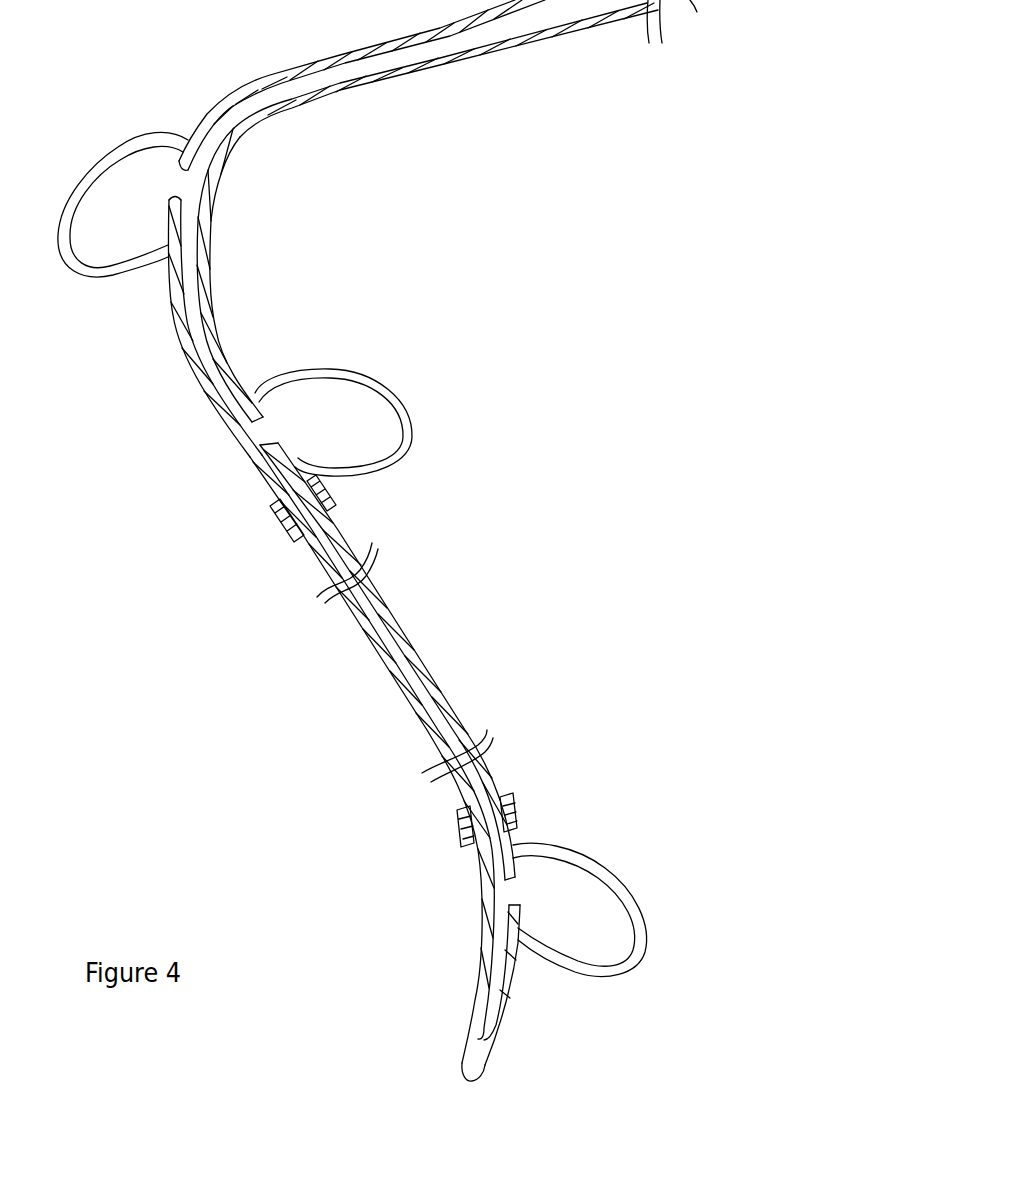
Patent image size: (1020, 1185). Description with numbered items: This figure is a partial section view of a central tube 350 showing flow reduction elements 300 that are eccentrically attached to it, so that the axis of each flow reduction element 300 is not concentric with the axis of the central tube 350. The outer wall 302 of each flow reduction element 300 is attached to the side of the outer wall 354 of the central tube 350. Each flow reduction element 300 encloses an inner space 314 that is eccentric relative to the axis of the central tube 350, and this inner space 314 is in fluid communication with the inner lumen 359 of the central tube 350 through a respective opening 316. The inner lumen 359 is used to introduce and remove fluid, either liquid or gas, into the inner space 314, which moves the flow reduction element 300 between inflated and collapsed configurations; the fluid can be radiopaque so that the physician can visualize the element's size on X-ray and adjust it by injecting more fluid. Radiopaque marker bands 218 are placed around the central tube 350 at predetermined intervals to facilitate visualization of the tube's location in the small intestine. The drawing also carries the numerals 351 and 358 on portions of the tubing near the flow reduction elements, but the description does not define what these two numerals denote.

The radiopaque marker bands 218 is at (512, 808).
The flow reduction element 300 is at (418, 410).
The outer wall 302 is at (343, 371).
The inner space 314 is at (600, 893).
The opening 316 is at (268, 433).
The central tube 350 is at (453, 72).
The tube leg 351 is at (250, 457).
The outer wall 354 is at (227, 343).
The distal sheath 358 is at (517, 890).
The inner lumen 359 is at (293, 87).